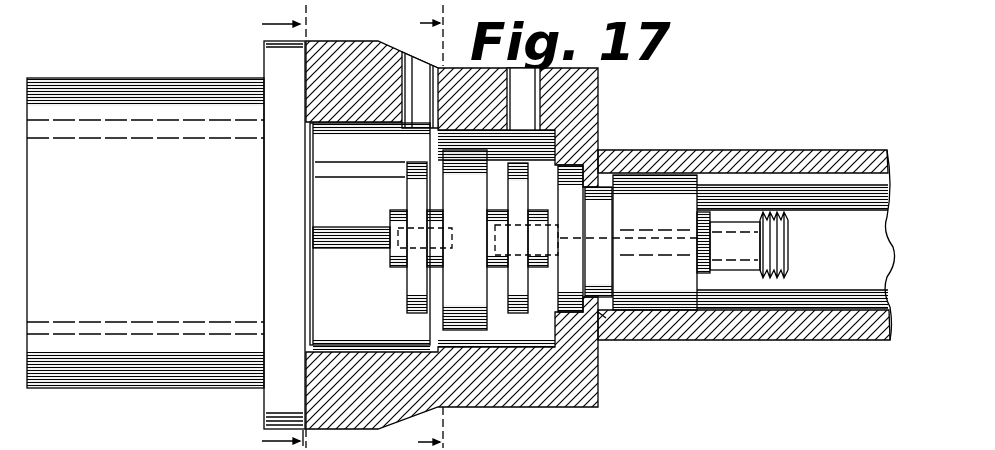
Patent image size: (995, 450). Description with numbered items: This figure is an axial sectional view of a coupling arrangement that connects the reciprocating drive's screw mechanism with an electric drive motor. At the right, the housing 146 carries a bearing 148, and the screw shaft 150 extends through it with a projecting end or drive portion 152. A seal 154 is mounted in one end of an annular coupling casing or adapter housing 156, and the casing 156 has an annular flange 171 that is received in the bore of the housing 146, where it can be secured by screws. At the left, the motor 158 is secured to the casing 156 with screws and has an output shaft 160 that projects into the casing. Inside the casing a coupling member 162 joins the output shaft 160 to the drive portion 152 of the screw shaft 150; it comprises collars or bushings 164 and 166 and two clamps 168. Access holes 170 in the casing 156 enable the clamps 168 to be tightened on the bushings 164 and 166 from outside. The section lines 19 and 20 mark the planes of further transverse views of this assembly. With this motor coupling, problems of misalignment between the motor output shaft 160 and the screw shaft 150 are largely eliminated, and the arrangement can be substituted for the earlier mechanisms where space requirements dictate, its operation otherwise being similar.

The section line 19- 19 is at (268, 227).
The section line 20- 20 is at (417, 227).
The housing 146 is at (795, 160).
The bearing 148 is at (677, 185).
The screw shaft 150 is at (789, 238).
The projecting end or drive portion 152 is at (590, 238).
The seal 154 is at (573, 180).
The annular coupling casing or adapter housing 156 is at (520, 385).
The motor 158 is at (175, 100).
The output shaft 160 is at (332, 235).
The coupling member 162 is at (473, 240).
The collar or bushing 164 is at (400, 235).
The collar or bushing 166 is at (540, 240).
The clamps 168 is at (415, 206).
The access holes 170 is at (423, 72).
The annular flange 171 is at (607, 323).